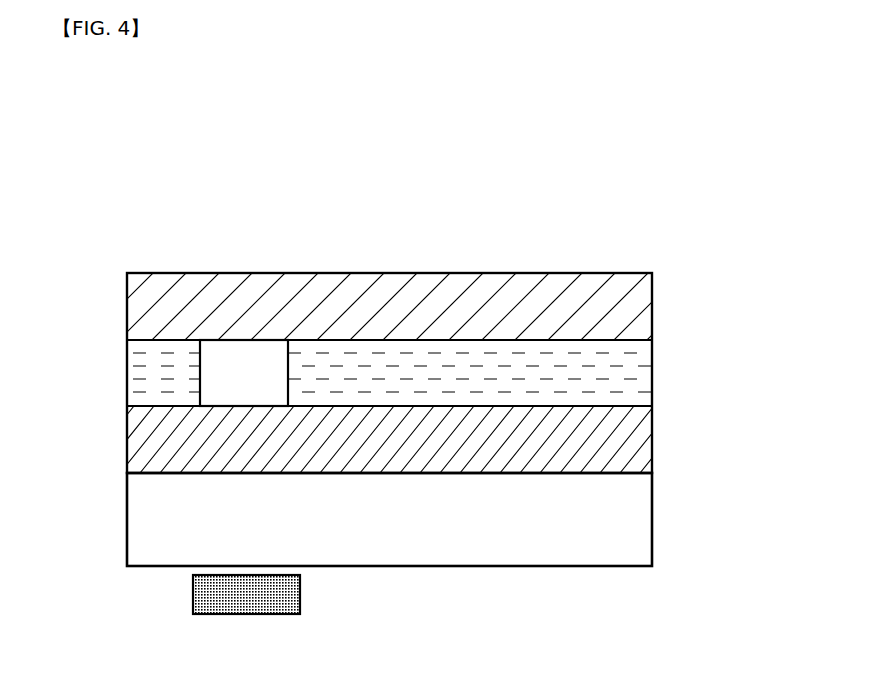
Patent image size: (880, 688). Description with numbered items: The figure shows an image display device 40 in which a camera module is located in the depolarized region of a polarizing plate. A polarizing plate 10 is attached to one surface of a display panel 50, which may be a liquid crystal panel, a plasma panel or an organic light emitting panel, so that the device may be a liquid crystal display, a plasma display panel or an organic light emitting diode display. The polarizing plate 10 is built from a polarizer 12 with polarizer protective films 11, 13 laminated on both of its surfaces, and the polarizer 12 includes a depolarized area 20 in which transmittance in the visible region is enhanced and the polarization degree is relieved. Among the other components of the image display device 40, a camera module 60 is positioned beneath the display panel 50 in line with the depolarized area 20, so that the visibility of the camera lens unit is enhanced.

The image display device 40 is at (450, 403).
The polarizing plate 10 is at (450, 373).
The polarizer protective film 11 is at (653, 300).
The polarizer 12 is at (653, 368).
The polarizer protective film 13 is at (648, 438).
The depolarized area 20 is at (232, 372).
The display panel 50 is at (625, 521).
The camera module 60 is at (297, 614).